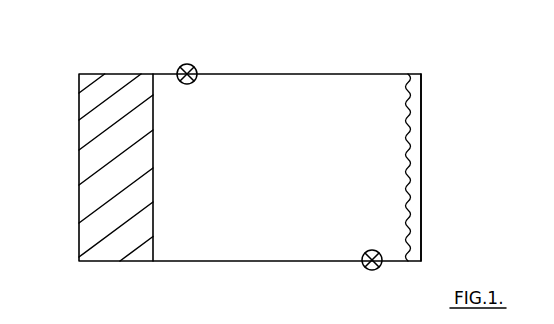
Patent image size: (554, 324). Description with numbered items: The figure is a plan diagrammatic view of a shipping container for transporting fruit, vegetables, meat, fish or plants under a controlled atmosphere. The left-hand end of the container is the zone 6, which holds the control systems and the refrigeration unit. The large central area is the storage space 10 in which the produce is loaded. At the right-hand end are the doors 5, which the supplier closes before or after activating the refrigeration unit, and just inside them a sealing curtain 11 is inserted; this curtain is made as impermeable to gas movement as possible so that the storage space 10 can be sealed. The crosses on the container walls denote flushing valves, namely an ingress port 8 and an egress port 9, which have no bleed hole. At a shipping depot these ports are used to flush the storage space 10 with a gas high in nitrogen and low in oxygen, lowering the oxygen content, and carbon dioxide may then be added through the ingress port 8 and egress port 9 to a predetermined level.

The doors 5 is at (421, 158).
The zone 6 is at (102, 182).
The ingress port 8 is at (379, 268).
The egress port 9 is at (192, 65).
The storage space 10 is at (250, 167).
The sealing curtain 11 is at (409, 198).